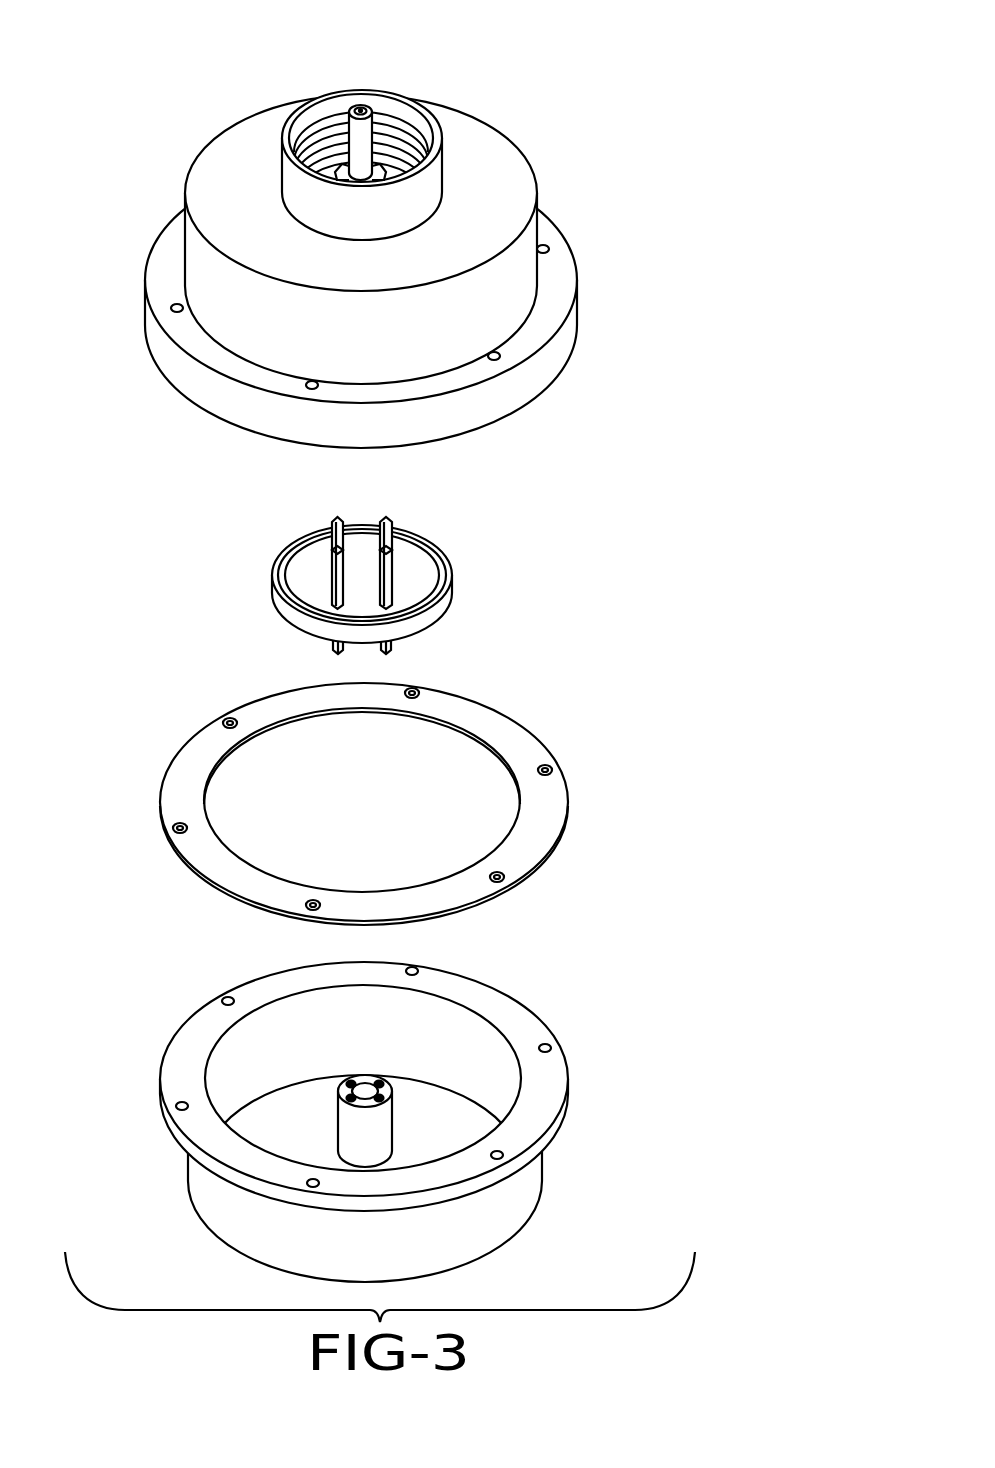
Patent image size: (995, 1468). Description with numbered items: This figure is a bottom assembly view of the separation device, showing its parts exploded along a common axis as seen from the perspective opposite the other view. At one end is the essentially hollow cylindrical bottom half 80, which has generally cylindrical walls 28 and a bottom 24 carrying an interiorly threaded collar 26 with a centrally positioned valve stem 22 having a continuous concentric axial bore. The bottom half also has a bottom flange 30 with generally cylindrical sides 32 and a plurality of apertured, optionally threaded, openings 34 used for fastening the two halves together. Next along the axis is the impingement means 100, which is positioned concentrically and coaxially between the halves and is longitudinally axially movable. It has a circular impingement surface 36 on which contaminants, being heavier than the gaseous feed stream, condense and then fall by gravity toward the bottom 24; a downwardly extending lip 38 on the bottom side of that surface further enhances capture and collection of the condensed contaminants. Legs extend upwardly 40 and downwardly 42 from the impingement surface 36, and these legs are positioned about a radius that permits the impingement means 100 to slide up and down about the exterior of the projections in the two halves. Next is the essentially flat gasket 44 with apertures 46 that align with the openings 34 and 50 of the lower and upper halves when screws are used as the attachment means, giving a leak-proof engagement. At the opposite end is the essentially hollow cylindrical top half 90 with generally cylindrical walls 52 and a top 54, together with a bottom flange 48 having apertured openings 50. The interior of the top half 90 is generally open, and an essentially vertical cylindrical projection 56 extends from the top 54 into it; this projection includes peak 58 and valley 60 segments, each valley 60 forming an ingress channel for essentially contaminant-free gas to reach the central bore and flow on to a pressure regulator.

The valve stem 22 is at (362, 107).
The bottom 24 is at (518, 146).
The interiorly threaded collar 26 is at (443, 173).
The cylindrical walls 28 is at (185, 258).
The bottom flange 30 is at (578, 297).
The cylindrical sides 32 is at (564, 366).
The apertured openings 34 is at (548, 246).
The impingement surface 36 is at (437, 617).
The downwardly extending lip 38 is at (417, 537).
The upwardly extending legs 40 is at (392, 652).
The downwardly extending legs 42 is at (337, 519).
The gasket 44 is at (494, 712).
The gasket apertures 46 is at (550, 766).
The bottom flange 48 is at (499, 990).
The apertured openings 50 is at (552, 1046).
The cylindrical walls 52 is at (543, 1168).
The top 54 is at (460, 1141).
The cylindrical projection 56 is at (340, 1130).
The peak segments 58 is at (368, 1080).
The valley segments 60 is at (383, 1080).
The bottom half 80 is at (632, 85).
The top half 90 is at (655, 985).
The impingement means 100 is at (640, 543).